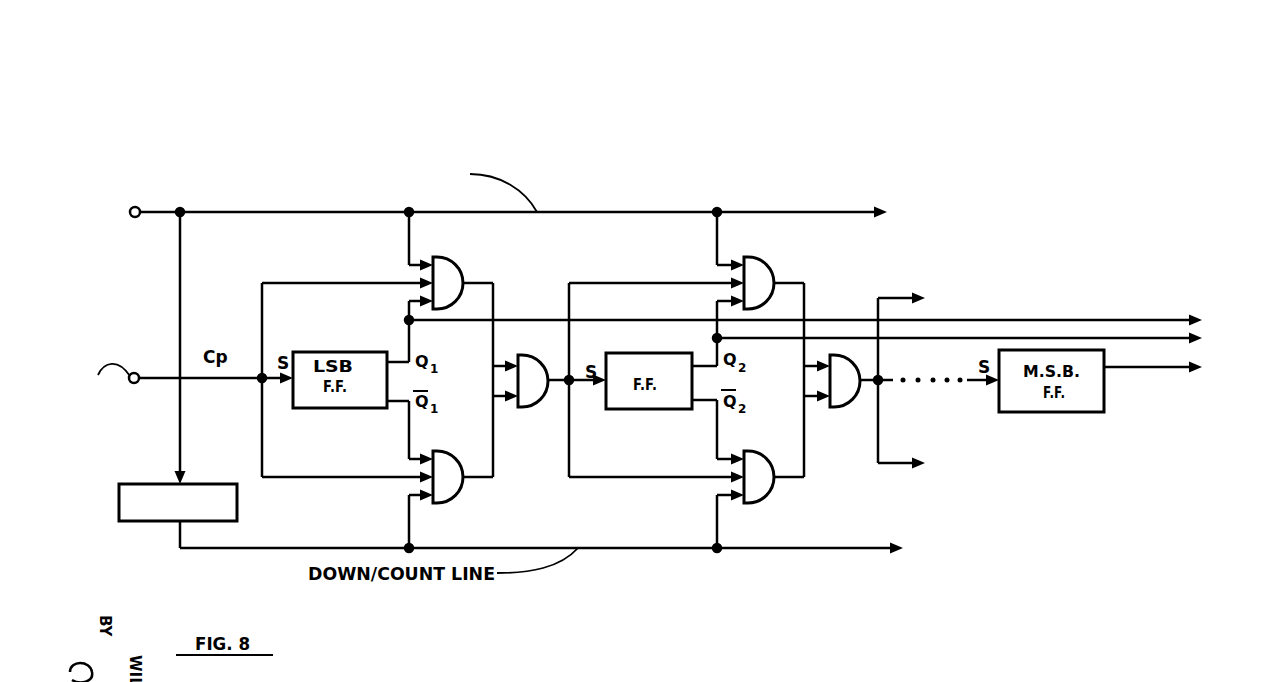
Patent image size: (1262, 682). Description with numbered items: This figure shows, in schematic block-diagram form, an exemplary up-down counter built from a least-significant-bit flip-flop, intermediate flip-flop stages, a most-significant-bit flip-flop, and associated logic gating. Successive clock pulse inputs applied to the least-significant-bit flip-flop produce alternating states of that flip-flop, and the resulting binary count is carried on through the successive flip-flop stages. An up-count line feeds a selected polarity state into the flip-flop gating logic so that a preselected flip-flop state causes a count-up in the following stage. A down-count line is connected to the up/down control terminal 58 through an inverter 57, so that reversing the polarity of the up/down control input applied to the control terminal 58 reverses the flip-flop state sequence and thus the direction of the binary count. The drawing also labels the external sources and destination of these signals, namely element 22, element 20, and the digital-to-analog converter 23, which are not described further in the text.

The inverter 57 is at (222, 514).
The control terminal 58 is at (130, 212).
The up/down control element of FIG. 3 22 is at (182, 128).
The clock pulse element of FIG. 3 20 is at (105, 379).
The digital-to-analog converter of FIG. 3 23 is at (824, 431).